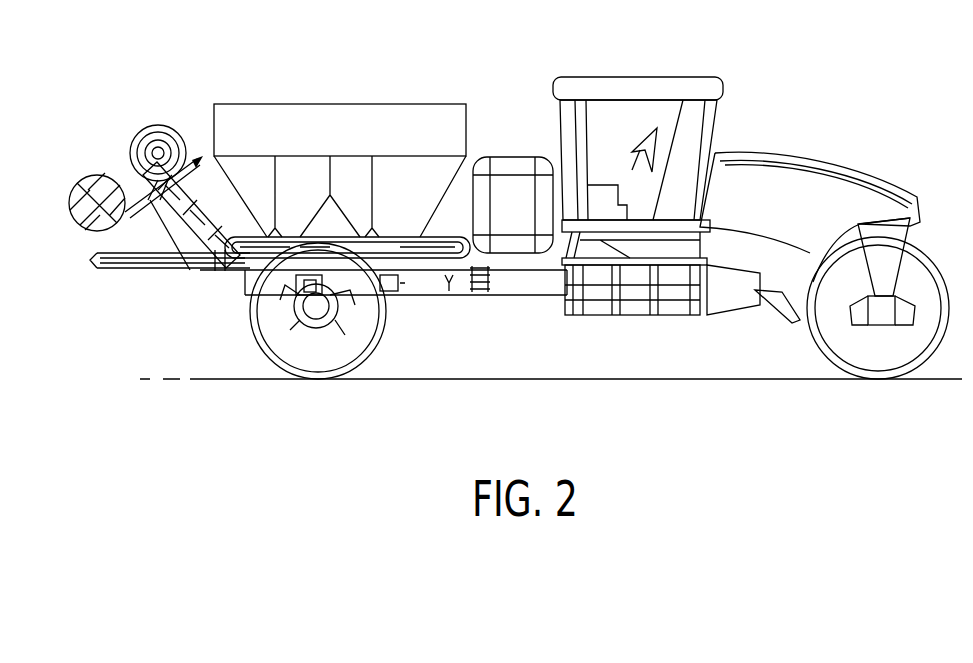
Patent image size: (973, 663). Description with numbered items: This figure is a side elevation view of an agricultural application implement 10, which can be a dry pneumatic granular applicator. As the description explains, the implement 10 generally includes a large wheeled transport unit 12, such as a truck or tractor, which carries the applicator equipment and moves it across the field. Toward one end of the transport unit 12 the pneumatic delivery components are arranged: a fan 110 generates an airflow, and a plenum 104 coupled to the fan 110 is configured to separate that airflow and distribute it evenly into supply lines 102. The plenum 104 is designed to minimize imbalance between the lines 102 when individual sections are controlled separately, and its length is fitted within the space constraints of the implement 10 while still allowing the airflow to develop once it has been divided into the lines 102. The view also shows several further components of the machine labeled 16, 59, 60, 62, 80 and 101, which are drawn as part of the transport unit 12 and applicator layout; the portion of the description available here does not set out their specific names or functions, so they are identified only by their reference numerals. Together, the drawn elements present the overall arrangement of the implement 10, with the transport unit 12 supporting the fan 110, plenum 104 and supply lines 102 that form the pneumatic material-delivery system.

The agricultural application implement 10 is at (629, 352).
The wheeled transport unit 12 is at (742, 145).
The chassis frame 16 is at (502, 300).
The hood 59 is at (846, 167).
The operator cab 60 is at (640, 78).
The hopper 62 is at (320, 88).
The wheel assembly 80 is at (240, 300).
The ground surface 101 is at (808, 382).
The supply lines 102 is at (190, 268).
The plenum 104 is at (148, 268).
The fan 110 is at (120, 150).